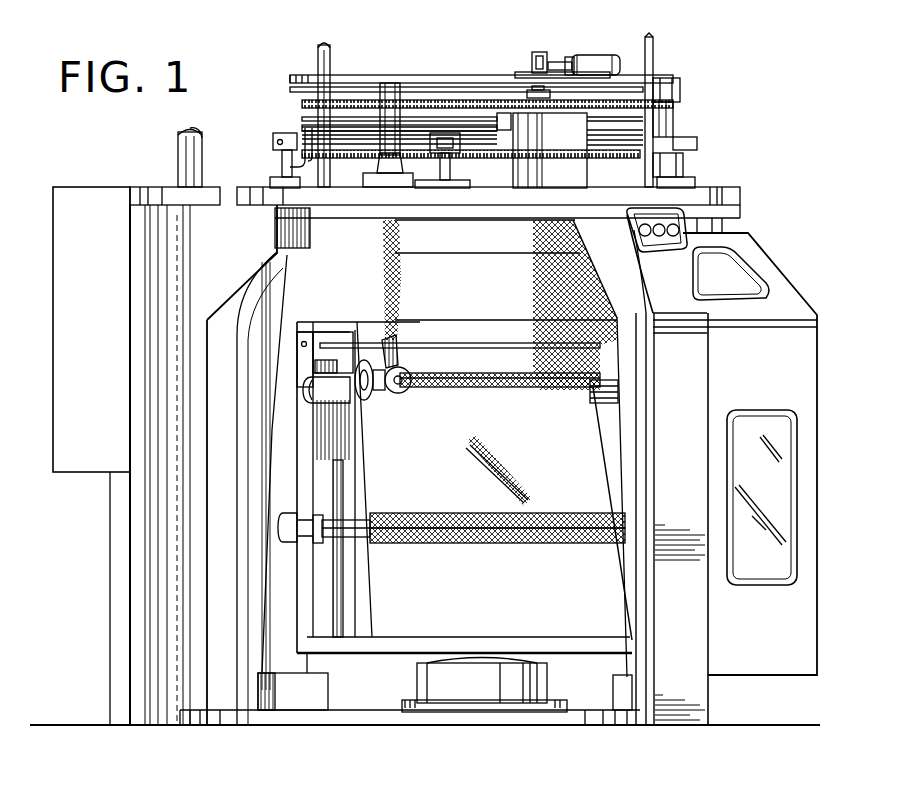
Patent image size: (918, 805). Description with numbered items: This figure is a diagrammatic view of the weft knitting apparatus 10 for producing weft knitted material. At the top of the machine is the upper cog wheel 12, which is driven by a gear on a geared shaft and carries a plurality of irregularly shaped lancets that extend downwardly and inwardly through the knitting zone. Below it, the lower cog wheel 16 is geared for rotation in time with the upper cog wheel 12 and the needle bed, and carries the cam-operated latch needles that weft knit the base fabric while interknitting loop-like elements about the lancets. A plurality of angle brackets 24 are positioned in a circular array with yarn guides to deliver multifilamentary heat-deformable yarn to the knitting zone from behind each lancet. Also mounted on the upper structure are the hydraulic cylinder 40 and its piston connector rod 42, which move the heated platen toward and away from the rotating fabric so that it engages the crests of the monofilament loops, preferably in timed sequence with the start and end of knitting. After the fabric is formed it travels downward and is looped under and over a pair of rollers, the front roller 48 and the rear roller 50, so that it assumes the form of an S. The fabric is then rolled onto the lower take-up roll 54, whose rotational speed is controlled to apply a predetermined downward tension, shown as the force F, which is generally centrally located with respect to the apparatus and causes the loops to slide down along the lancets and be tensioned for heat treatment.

The weft knitting apparatus 10 is at (690, 164).
The upper cog wheel 12 is at (302, 101).
The lower cog wheel 16 is at (308, 163).
The angle brackets 24 is at (302, 127).
The hydraulic cylinder 40 is at (607, 55).
The piston connector rod 42 is at (557, 52).
The front roller 48 is at (333, 395).
The rear roller 50 is at (604, 365).
The take-up roll 54 is at (363, 537).
The downward force F is at (538, 438).